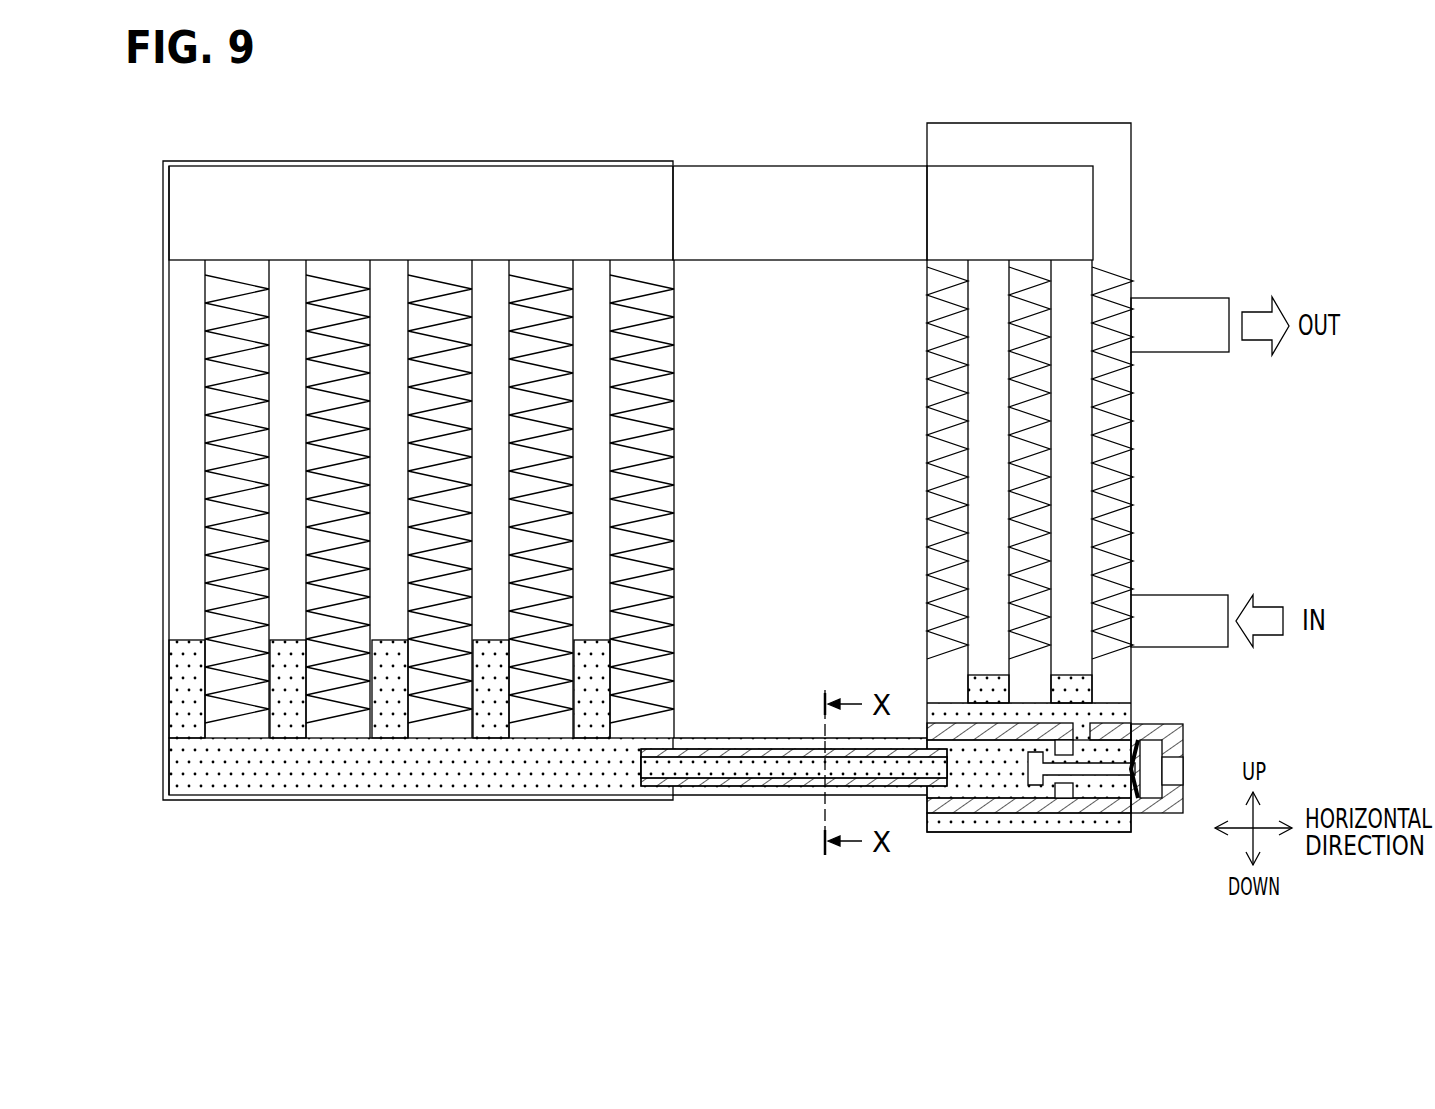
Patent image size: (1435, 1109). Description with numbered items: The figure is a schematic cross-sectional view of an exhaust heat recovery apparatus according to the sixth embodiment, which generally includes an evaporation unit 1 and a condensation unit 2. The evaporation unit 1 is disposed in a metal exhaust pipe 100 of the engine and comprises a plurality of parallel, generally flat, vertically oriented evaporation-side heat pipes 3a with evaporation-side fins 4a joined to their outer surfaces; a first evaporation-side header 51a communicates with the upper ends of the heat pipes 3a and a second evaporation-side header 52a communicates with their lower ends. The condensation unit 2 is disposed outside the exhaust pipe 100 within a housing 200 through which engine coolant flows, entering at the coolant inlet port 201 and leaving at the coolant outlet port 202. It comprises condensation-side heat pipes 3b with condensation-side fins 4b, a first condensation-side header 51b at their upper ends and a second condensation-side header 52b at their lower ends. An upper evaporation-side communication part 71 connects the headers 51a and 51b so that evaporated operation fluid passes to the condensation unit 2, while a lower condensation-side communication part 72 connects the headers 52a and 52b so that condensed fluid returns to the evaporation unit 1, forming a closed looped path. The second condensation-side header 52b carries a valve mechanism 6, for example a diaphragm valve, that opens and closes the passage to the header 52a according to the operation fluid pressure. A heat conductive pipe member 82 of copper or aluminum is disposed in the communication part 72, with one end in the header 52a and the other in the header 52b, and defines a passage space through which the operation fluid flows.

The exhaust pipe 100 is at (207, 161).
The evaporation unit 1 is at (266, 279).
The condensation unit 2 is at (965, 275).
The evaporation-side heat pipes 3a is at (470, 280).
The condensation-side heat pipes 3b is at (1130, 412).
The evaporation-side fins 4a is at (530, 278).
The condensation-side fins 4b is at (1130, 465).
The first evaporation-side header 51a is at (598, 190).
The first condensation-side header 51b is at (1015, 195).
The second evaporation-side header 52a is at (325, 775).
The second condensation-side header 52b is at (987, 825).
The valve mechanism 6 is at (1100, 785).
The evaporation-side communication part 71 is at (735, 205).
The condensation-side communication part 72 is at (760, 785).
The pipe member 82 is at (760, 755).
The housing 200 is at (1116, 124).
The coolant inlet port 201 is at (1200, 633).
The coolant outlet port 202 is at (1178, 318).